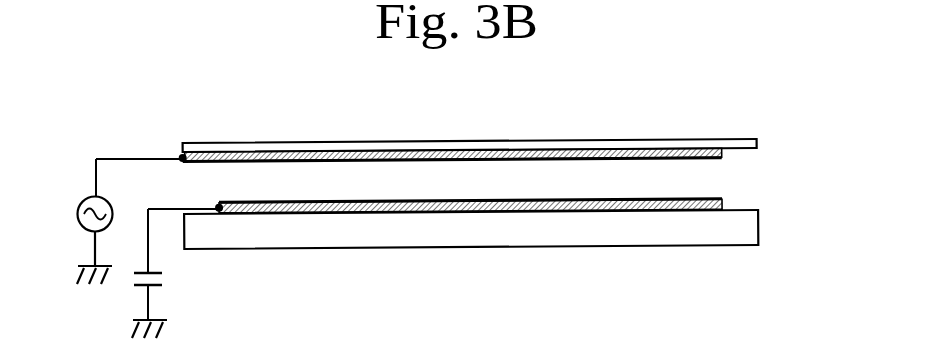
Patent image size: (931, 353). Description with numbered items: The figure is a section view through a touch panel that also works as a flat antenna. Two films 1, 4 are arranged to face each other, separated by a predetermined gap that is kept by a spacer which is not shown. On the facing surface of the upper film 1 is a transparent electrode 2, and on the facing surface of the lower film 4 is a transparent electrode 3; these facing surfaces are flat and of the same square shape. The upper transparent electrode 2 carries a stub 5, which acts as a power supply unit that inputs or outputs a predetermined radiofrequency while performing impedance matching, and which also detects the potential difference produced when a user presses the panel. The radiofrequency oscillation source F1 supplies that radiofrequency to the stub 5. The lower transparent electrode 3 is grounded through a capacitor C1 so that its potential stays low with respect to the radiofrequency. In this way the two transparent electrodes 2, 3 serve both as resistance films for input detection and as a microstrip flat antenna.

The film 1 is at (417, 148).
The transparent electrode 2 is at (665, 156).
The transparent electrode 3 is at (637, 203).
The film 4 is at (460, 233).
The stub 5 is at (199, 158).
The radiofrequency oscillation source F1 is at (115, 221).
The capacitor C1 is at (175, 273).